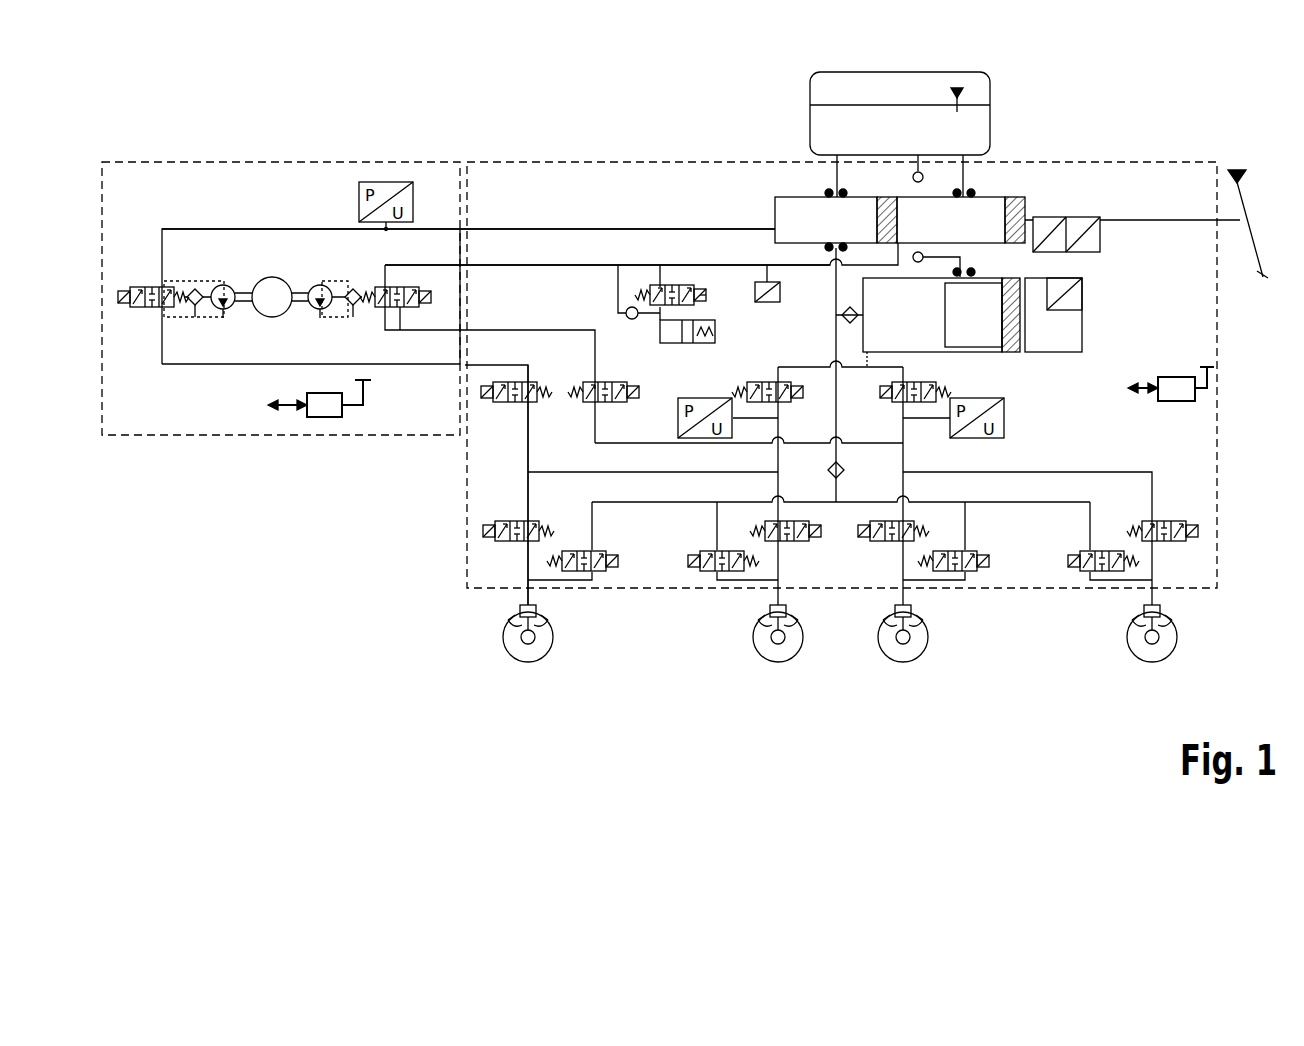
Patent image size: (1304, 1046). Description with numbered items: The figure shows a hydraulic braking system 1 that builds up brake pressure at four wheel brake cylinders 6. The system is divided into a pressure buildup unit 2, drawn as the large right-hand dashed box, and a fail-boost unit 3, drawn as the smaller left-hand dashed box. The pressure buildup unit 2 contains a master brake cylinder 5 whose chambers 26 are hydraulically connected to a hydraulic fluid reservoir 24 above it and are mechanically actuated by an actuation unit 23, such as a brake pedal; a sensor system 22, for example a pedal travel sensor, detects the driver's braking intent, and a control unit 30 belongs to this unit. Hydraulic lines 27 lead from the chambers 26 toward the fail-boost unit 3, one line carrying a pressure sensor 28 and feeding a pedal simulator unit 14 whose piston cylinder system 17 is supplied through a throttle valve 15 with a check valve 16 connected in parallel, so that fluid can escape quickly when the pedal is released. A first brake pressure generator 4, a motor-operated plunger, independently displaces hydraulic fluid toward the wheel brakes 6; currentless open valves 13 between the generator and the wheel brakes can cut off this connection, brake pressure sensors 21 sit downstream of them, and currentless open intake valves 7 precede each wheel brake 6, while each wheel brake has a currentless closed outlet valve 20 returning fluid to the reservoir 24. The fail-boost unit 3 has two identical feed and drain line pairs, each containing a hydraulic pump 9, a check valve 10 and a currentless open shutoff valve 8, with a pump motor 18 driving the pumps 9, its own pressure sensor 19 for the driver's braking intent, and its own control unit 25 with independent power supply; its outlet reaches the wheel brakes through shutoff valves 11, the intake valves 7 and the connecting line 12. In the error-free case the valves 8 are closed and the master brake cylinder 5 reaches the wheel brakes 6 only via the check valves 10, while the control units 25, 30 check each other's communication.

The hydraulic braking system 1 is at (455, 122).
The pressure buildup unit 2 is at (456, 600).
The fail-boost unit 3 is at (189, 448).
The first brake pressure generator 4 is at (1082, 318).
The master brake cylinder 5 is at (764, 176).
The wheel brake cylinder 6 is at (528, 662).
The intake valve 7 is at (483, 531).
The shutoff valve 8 is at (118, 297).
The hydraulic pump 9 is at (228, 311).
The check valve 10 is at (190, 293).
The shutoff valve 11 is at (481, 396).
The hydraulic line 12 is at (528, 448).
The currentless open valve 13 is at (747, 384).
The pedal simulator unit 14 is at (708, 299).
The throttle valve 15 is at (672, 285).
The check valve 16 is at (626, 313).
The piston cylinder system 17 is at (660, 333).
The pump motor 18 is at (265, 280).
The pressure sensor 19 is at (359, 203).
The outlet valve 20 is at (618, 564).
The brake pressure sensor 21 is at (678, 420).
The sensor system 22 is at (1082, 252).
The actuation unit 23 is at (1237, 170).
The hydraulic fluid reservoir 24 is at (913, 72).
The control unit 25 is at (293, 400).
The chamber 26 is at (775, 208).
The hydraulic line 27 is at (515, 263).
The pressure sensor 28 is at (780, 292).
The control unit 30 is at (1143, 393).